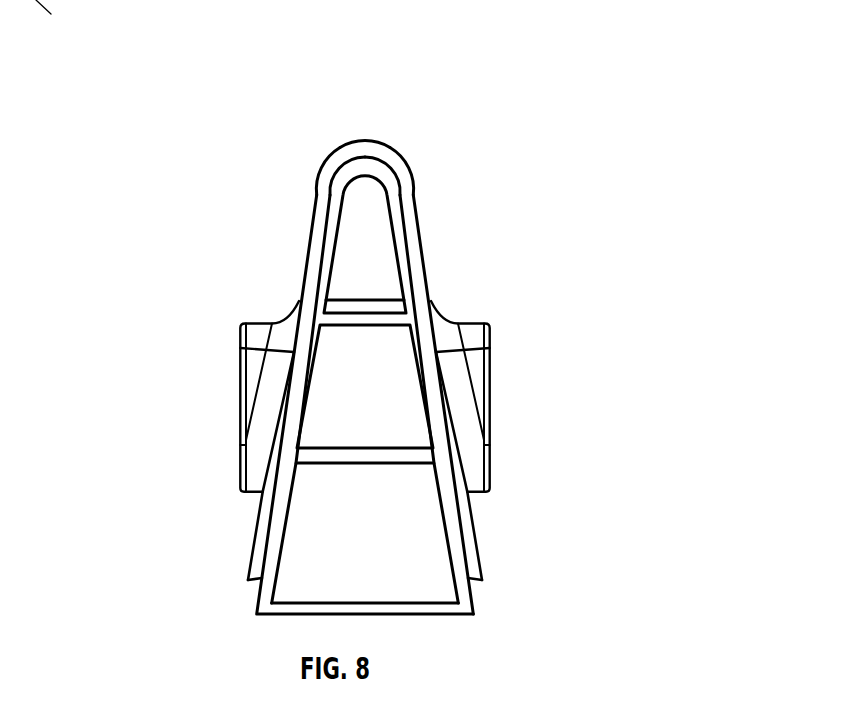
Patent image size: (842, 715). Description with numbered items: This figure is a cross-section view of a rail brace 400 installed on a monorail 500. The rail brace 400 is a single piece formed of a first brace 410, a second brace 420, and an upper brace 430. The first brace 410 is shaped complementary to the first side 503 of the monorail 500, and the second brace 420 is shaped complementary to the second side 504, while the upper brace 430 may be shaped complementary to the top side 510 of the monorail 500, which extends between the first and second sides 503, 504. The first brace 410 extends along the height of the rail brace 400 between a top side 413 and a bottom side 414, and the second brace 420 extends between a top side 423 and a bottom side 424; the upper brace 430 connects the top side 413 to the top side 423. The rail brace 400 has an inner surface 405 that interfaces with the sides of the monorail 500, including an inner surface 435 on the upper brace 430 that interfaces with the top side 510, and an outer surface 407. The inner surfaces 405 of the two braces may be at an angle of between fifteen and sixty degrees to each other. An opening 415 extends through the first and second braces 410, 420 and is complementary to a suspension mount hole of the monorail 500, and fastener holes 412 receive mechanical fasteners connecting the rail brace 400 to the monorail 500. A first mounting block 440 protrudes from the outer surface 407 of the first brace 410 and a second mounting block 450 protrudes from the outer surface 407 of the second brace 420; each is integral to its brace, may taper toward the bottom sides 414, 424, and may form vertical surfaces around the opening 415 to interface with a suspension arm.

The rail brace 400 is at (693, 44).
The inner surface 405 is at (410, 267).
The outer surface 407 is at (430, 290).
The first brace 410 is at (266, 512).
The fastener holes 412 is at (60, 20).
The top side of first brace 413 is at (322, 173).
The bottom side of first brace 414 is at (251, 575).
The opening 415 is at (238, 398).
The second brace 420 is at (465, 517).
The top side of second brace 423 is at (408, 164).
The bottom side of second brace 424 is at (480, 573).
The upper brace 430 is at (367, 141).
The inner surface of upper brace 435 is at (355, 157).
The first mounting block 440 is at (255, 452).
The second mounting block 450 is at (490, 472).
The monorail 500 is at (441, 508).
The first side of monorail 503 is at (318, 277).
The second side of monorail 504 is at (448, 473).
The top side of monorail 510 is at (377, 157).